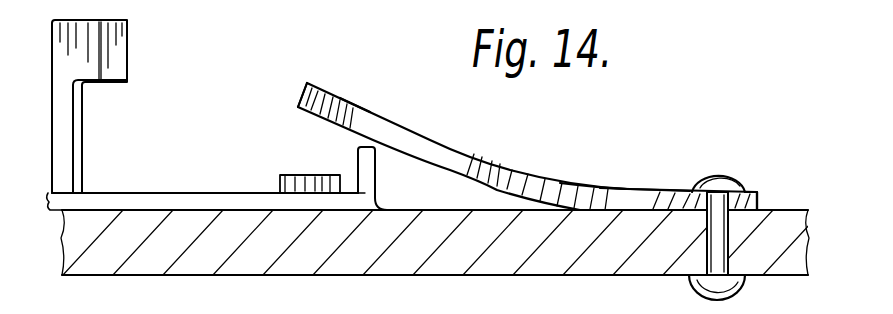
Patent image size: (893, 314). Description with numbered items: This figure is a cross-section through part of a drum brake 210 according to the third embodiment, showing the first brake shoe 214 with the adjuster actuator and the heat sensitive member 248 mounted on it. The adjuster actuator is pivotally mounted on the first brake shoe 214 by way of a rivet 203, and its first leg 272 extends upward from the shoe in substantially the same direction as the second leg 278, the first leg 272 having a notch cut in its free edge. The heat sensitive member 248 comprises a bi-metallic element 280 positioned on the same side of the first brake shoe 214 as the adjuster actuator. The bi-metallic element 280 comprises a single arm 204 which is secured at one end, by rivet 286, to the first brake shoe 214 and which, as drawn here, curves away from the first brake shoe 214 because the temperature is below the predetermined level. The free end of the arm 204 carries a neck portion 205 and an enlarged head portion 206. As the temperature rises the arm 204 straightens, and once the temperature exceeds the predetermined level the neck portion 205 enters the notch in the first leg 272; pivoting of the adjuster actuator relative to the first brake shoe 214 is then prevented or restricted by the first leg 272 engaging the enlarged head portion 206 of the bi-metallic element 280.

The second leg 278 is at (118, 53).
The enlarged head portion 206 is at (303, 88).
The neck portion 205 is at (357, 106).
The arm 204 is at (512, 170).
The bi-metallic element 280 is at (578, 172).
The heat sensitive member 248 is at (618, 183).
The rivet 286 is at (707, 180).
The drum brake 210 is at (787, 185).
The rivet 203 is at (303, 175).
The first leg 272 is at (377, 170).
The first brake shoe 214 is at (612, 245).